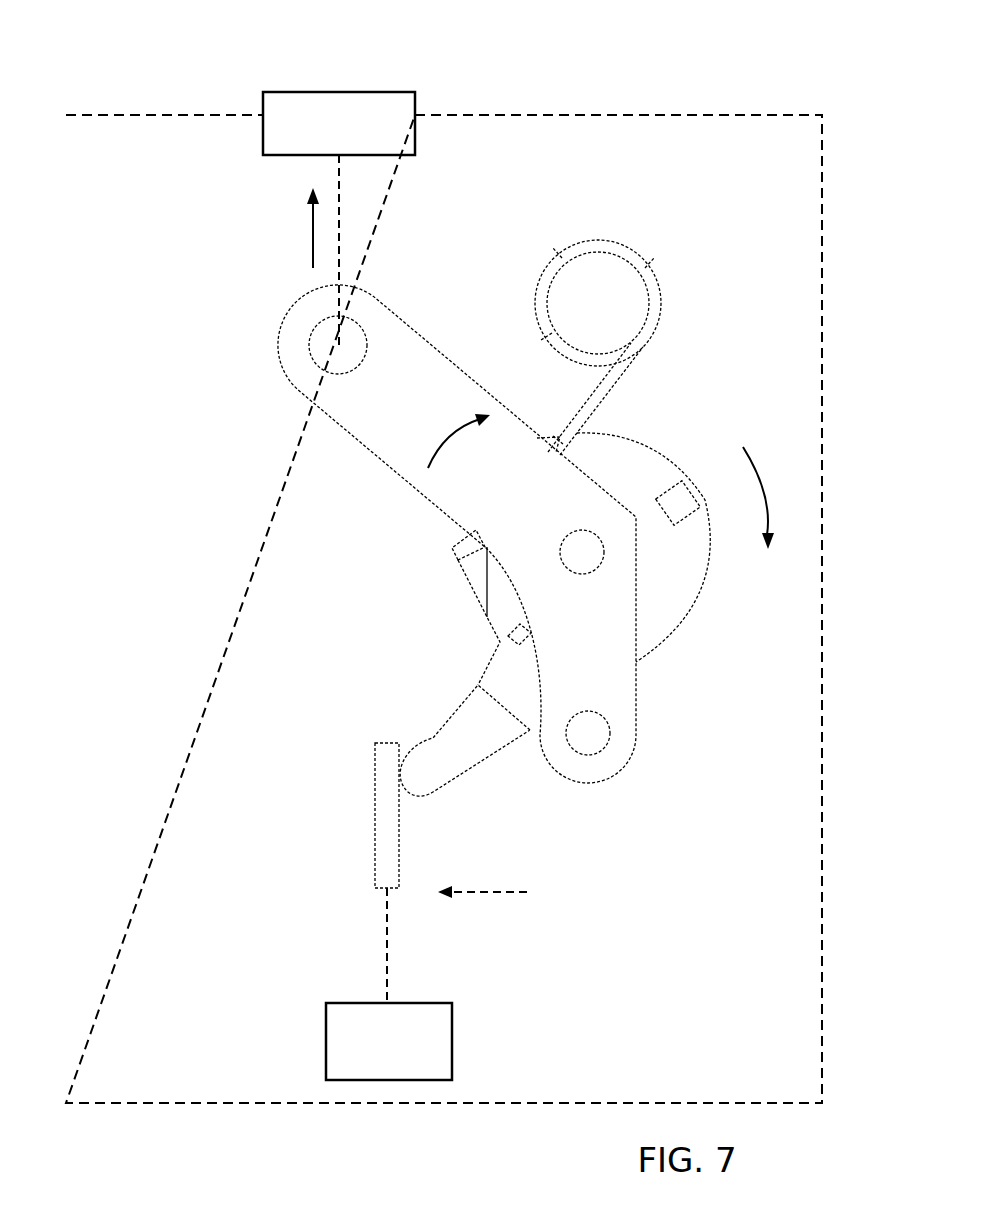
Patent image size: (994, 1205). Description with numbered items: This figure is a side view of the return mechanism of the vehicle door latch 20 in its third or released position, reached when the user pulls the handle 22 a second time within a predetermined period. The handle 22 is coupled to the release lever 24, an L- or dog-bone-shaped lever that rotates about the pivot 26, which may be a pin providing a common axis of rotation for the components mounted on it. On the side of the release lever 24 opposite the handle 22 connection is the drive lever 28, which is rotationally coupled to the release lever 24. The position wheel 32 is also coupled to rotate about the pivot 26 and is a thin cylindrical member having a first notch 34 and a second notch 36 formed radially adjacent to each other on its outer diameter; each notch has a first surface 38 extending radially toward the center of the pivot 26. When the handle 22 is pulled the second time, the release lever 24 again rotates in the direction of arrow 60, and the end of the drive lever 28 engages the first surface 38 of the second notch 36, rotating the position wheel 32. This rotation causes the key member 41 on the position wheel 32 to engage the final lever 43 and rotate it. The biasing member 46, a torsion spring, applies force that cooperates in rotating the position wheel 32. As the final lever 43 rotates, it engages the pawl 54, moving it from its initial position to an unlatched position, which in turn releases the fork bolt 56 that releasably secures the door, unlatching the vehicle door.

The latch 20 is at (692, 112).
The handle 22 is at (353, 92).
The release lever 24 is at (355, 433).
The pivot 26 is at (572, 535).
The drive lever 28 is at (512, 713).
The position wheel 32 is at (610, 433).
The first notch 34 is at (470, 574).
The second notch 36 is at (486, 653).
The first surface 38 is at (512, 636).
The key member 41 is at (680, 507).
The final lever 43 is at (458, 782).
The biasing member 46 is at (540, 210).
The pawl 54 is at (375, 787).
The fork bolt 56 is at (326, 1032).
The arrow 60 is at (432, 458).